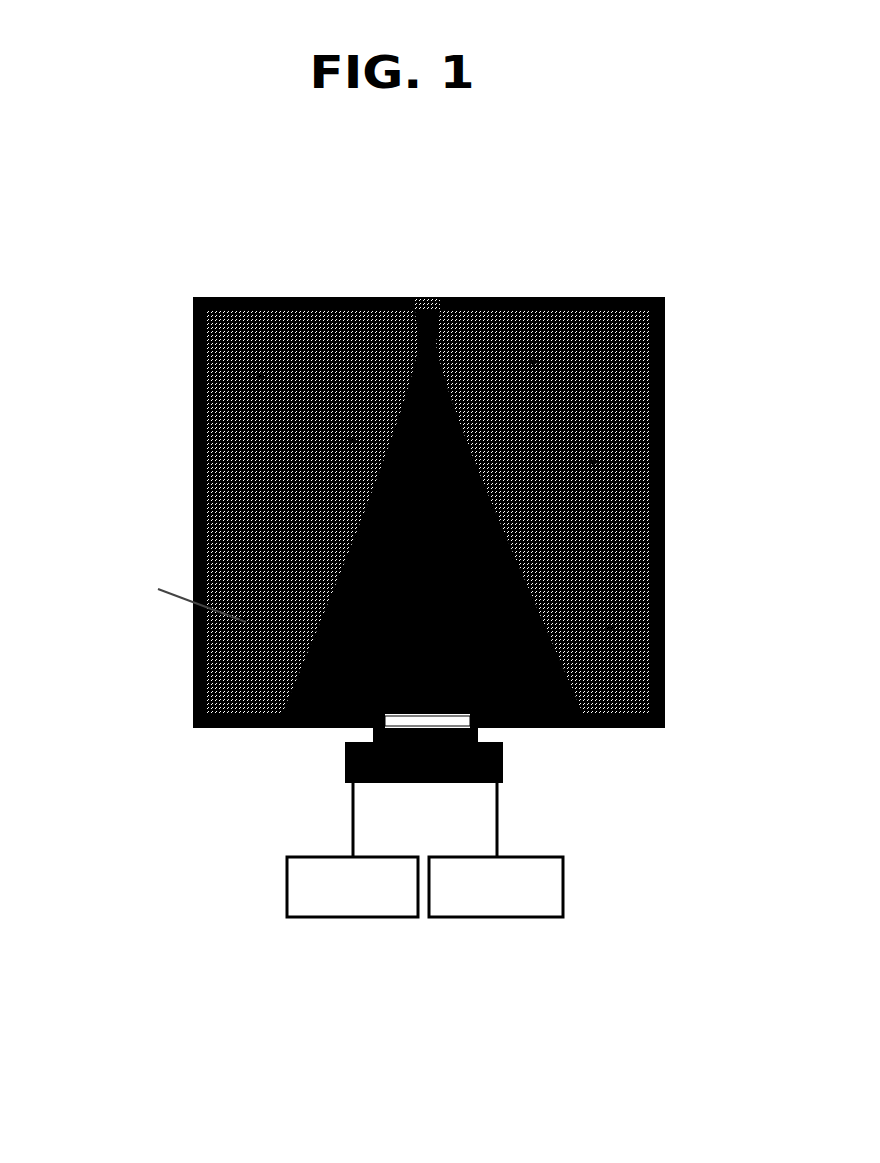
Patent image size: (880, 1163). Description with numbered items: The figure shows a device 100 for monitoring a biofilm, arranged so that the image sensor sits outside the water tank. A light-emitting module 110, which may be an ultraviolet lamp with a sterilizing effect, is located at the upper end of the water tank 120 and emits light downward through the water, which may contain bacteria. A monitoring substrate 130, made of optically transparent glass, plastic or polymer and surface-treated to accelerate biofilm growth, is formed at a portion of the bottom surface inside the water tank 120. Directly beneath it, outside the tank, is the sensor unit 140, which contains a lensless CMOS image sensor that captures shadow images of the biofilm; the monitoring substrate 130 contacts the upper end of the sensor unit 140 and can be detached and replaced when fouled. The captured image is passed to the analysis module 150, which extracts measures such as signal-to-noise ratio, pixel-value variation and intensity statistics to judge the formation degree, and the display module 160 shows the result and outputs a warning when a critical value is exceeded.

The device 100 is at (666, 258).
The light-emitting module 110 is at (428, 297).
The water tank 120 is at (193, 417).
The monitoring substrate 130 is at (428, 722).
The sensor unit 140 is at (503, 762).
The analysis module 150 is at (352, 917).
The display module 160 is at (497, 917).